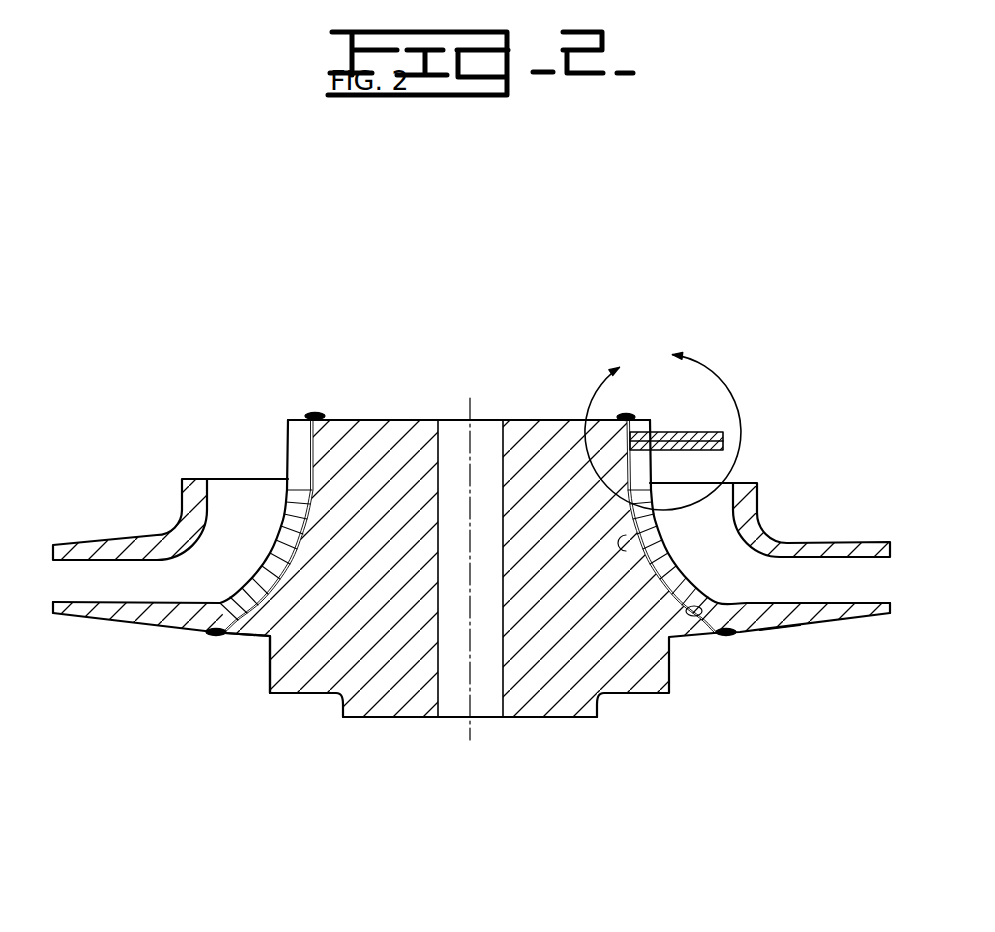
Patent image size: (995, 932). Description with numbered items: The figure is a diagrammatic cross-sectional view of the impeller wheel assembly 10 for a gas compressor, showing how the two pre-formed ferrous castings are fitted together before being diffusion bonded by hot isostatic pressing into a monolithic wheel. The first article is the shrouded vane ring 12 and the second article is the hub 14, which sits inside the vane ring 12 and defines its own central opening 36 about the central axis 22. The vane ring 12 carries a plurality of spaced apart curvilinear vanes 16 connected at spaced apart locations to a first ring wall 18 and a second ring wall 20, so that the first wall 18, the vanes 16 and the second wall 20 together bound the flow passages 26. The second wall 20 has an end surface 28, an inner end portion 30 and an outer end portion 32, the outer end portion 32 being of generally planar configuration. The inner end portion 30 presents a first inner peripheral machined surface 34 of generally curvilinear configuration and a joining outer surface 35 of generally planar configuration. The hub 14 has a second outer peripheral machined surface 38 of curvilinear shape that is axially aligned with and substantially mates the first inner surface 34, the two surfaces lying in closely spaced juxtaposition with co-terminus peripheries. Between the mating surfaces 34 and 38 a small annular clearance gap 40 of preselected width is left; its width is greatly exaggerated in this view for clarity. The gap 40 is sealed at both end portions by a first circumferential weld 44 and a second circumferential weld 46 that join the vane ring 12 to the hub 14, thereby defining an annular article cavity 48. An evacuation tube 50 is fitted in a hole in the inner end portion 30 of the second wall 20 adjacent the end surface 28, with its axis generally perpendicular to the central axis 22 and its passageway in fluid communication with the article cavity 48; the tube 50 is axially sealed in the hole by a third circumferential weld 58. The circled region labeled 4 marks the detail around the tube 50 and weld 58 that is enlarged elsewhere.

The impeller wheel assembly 10 is at (778, 358).
The vane ring 12 is at (150, 630).
The hub 14 is at (363, 723).
The vanes 16 is at (222, 578).
The first ring wall 18 is at (140, 537).
The second ring wall 20 is at (70, 594).
The central axis 22 is at (483, 405).
The flow passages 26 is at (130, 590).
The end surface 28 is at (300, 417).
The inner end portion 30 is at (309, 450).
The outer end portion 32 is at (850, 607).
The first inner peripheral machined surface 34 is at (650, 533).
The joining outer surface 35 is at (760, 632).
The central opening 36 is at (503, 700).
The second outer peripheral machined surface 38 is at (700, 640).
The annular clearance gap 40 is at (262, 628).
The first circumferential weld 44 is at (318, 413).
The second circumferential weld 46 is at (217, 637).
The annular article cavity 48 is at (650, 588).
The evacuation tube 50 is at (690, 427).
The third circumferential weld 58 is at (650, 428).
The detail circle FIG. 4 is at (663, 427).